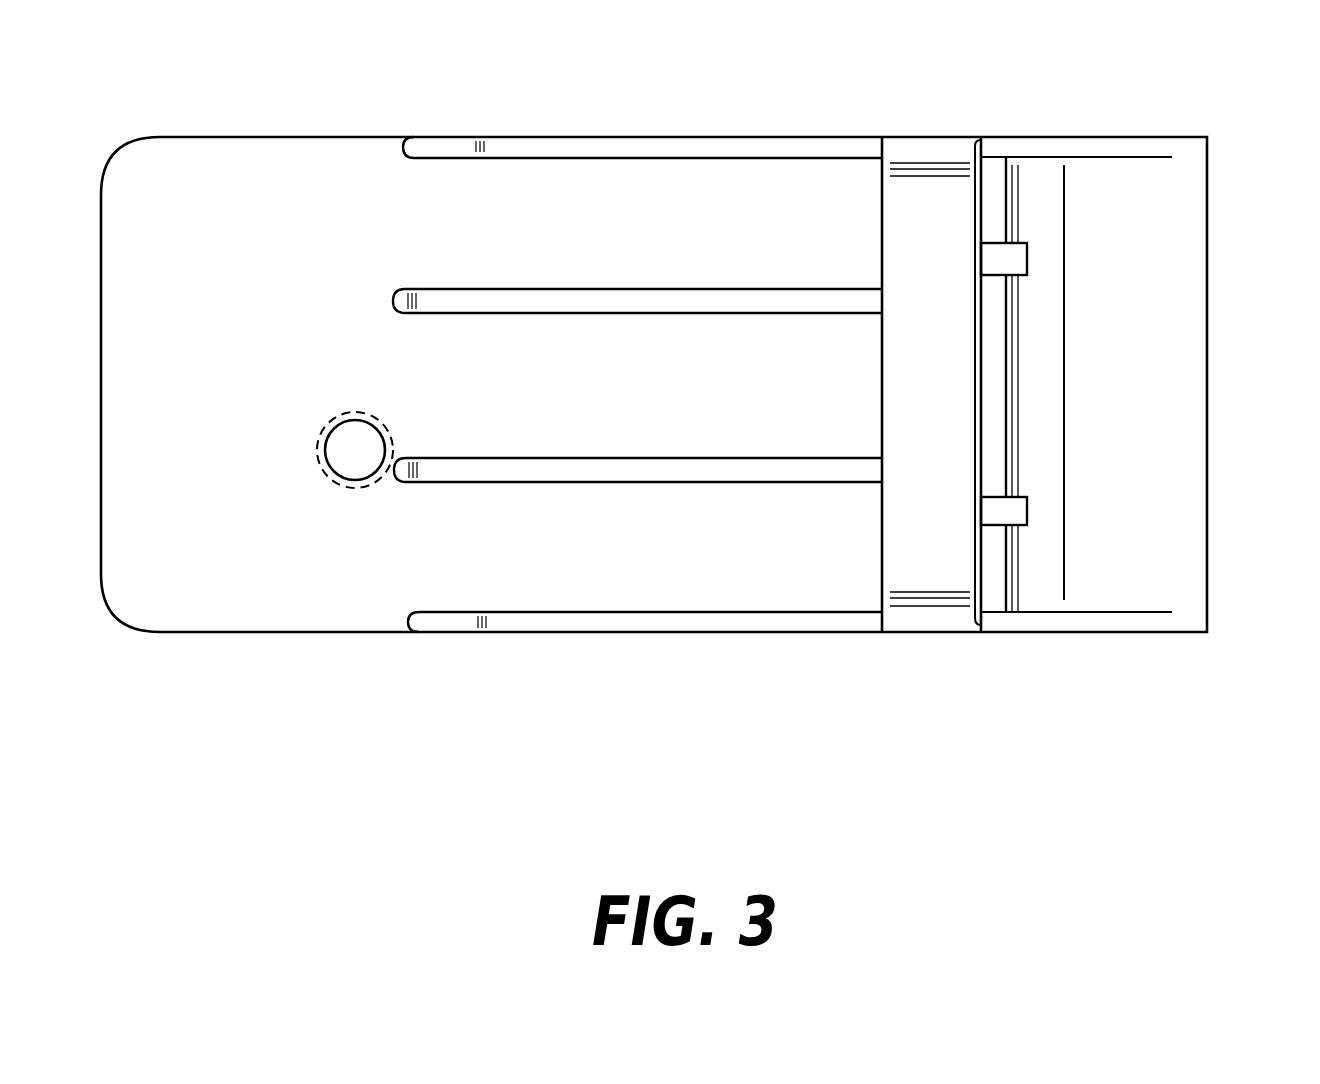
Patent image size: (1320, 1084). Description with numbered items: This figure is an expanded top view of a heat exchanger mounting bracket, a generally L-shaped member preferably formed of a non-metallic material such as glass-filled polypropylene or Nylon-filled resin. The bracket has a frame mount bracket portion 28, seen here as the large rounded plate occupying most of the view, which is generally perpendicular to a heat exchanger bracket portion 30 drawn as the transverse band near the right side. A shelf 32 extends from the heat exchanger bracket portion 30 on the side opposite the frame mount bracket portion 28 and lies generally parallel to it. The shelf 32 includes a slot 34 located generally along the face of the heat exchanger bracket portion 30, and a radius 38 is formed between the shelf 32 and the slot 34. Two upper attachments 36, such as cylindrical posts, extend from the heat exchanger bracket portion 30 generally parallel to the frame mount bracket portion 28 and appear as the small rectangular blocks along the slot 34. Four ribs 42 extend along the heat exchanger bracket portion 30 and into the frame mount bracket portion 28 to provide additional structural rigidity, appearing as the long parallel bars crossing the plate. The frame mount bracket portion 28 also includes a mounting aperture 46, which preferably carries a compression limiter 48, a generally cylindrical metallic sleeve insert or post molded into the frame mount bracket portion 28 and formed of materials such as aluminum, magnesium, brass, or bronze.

The frame mount bracket portion 28 is at (615, 578).
The heat exchanger bracket portion 30 is at (923, 557).
The shelf 32 is at (1170, 356).
The slot 34 is at (995, 598).
The upper attachment 36 is at (1012, 240).
The radius 38 is at (1056, 597).
The ribs 42 is at (658, 140).
The mounting aperture 46 is at (352, 462).
The compression limiter 48 is at (323, 470).